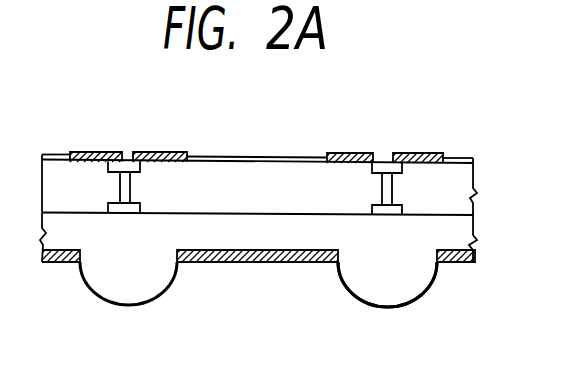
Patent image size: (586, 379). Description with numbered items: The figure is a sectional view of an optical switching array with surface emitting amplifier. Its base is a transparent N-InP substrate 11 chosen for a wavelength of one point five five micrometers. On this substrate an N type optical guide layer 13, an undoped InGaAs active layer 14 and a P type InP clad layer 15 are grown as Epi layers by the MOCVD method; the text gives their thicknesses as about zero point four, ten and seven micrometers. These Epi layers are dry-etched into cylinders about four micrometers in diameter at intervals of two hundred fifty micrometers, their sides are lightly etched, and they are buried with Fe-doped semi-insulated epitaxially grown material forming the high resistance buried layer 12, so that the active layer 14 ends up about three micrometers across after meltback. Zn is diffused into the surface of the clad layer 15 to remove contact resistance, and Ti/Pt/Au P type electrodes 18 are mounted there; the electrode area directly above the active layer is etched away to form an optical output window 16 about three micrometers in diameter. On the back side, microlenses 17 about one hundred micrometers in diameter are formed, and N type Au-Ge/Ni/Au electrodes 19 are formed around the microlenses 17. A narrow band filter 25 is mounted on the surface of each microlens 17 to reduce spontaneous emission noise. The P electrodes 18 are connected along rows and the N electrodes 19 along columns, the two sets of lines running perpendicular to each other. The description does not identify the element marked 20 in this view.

The N-InP substrate 11 is at (460, 238).
The high resistance buried layer 12 is at (460, 200).
The N type optical guide layer 13 is at (405, 204).
The active layer 14 is at (389, 190).
The P type InP clad layer 15 is at (385, 167).
The optical output window 16 is at (125, 160).
The microlens 17 is at (412, 277).
The P type electrode 18 is at (158, 152).
The N type electrode 19 is at (310, 263).
The thin film layer 20 is at (238, 157).
The narrow band filter 25 is at (399, 308).